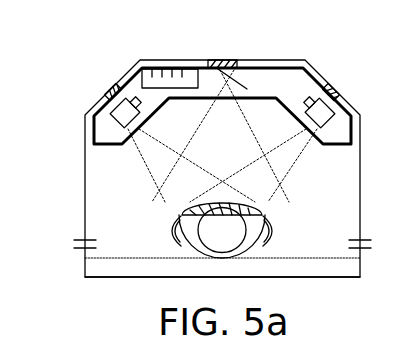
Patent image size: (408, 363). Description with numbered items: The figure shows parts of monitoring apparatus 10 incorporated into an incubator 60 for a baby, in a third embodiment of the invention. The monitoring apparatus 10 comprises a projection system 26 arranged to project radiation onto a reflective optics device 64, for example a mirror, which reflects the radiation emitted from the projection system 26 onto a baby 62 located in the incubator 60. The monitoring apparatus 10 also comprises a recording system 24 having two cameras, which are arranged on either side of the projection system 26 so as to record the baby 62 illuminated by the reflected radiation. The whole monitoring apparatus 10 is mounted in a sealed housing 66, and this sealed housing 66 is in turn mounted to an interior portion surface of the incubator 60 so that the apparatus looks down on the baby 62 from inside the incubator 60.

The monitoring apparatus 10 is at (115, 158).
The recording system 24 is at (117, 115).
The projection system 26 is at (192, 77).
The incubator 60 is at (85, 215).
The baby 62 is at (278, 233).
The reflective optics device 64 is at (241, 81).
The sealed housing 66 is at (319, 78).